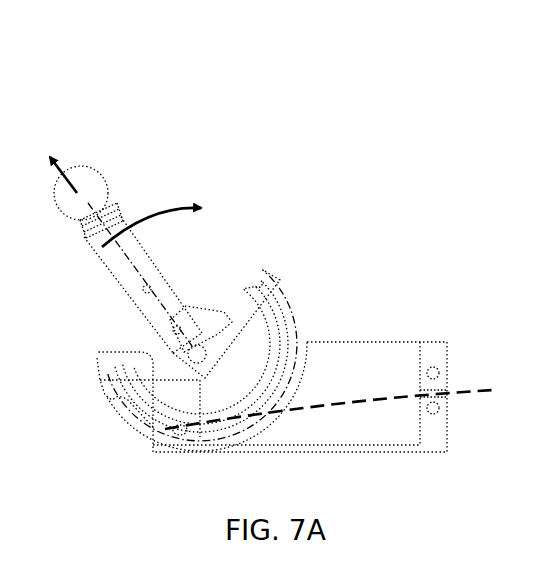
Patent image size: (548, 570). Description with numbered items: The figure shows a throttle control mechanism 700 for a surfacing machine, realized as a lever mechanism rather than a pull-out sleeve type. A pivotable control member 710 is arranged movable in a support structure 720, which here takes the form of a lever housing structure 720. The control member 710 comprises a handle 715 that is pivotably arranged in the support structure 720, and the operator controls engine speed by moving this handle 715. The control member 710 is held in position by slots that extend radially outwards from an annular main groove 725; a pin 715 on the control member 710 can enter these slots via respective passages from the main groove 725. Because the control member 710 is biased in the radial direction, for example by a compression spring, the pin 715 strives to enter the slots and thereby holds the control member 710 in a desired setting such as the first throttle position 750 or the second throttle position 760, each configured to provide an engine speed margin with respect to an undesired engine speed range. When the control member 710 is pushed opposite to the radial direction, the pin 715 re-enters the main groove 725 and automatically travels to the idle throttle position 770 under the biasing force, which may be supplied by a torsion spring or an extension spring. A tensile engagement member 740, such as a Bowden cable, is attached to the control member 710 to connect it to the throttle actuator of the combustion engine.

The throttle control mechanism 700 is at (333, 86).
The control member 710 is at (98, 172).
The handle / pin 715 is at (119, 219).
The support structure 720 is at (319, 378).
The annular main groove 725 is at (258, 281).
The tensile engagement member 740 is at (483, 390).
The first throttle position 750 is at (210, 260).
The second throttle position 760 is at (255, 277).
The idle throttle position 770 is at (142, 279).